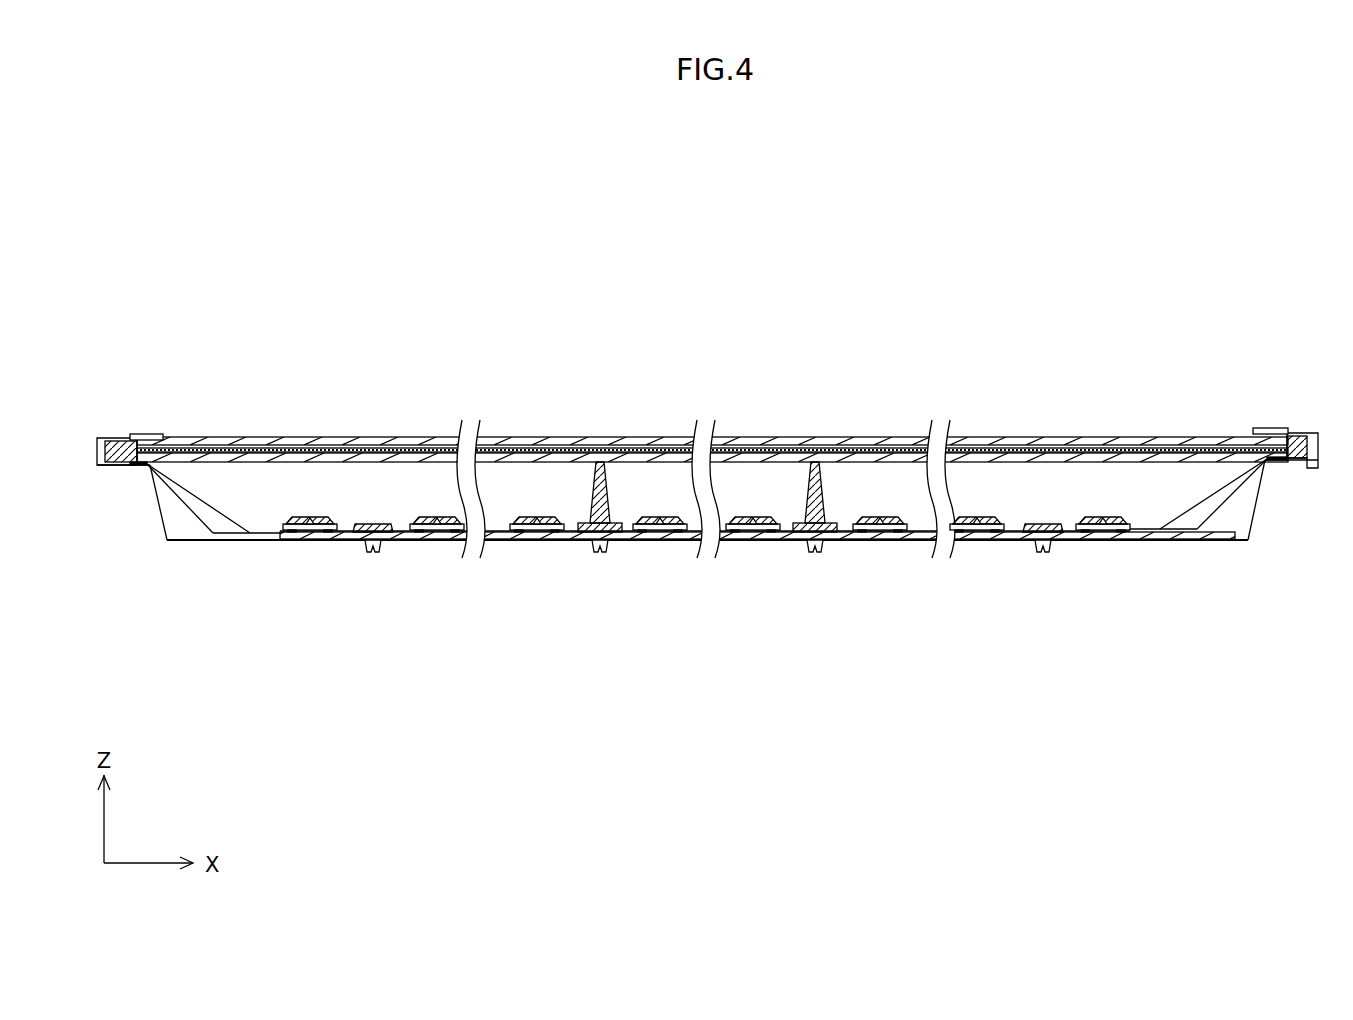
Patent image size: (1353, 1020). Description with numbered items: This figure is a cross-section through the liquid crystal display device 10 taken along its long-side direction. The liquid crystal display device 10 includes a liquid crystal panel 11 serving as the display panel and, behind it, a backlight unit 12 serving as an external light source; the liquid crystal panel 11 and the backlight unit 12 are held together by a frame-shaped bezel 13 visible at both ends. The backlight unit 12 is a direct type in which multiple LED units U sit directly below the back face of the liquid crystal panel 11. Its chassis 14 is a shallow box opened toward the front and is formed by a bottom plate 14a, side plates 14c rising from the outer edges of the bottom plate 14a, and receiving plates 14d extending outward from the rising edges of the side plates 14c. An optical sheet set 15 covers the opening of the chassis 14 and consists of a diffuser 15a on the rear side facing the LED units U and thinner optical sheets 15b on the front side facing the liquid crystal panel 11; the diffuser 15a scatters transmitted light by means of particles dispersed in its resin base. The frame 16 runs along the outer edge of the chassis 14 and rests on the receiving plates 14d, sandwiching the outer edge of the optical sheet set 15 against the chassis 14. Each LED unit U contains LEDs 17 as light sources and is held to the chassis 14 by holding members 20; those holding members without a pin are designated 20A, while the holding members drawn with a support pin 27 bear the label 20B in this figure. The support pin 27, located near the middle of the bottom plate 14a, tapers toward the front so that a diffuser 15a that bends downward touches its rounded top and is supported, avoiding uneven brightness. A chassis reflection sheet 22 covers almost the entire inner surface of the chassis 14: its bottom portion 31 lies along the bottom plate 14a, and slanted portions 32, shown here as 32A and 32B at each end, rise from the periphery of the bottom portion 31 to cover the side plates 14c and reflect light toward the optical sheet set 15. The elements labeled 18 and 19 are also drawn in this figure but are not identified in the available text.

The liquid crystal display device 10 is at (594, 318).
The liquid crystal panel 11 is at (546, 437).
The backlight unit 12 is at (578, 594).
The bezel 13 is at (152, 433).
The chassis 14 is at (412, 542).
The bottom plate 14a is at (240, 542).
The side plate 14c is at (152, 542).
The receiving plate 14d is at (106, 470).
The optical sheet set 15 is at (712, 392).
The diffuser 15a is at (690, 457).
The optical sheet 15b is at (662, 451).
The frame 16 is at (107, 433).
The LED 17 is at (328, 542).
The LED board 18 is at (525, 542).
The LED 19 is at (310, 516).
The holding member 20 is at (771, 500).
The holding member without support pin 20A is at (378, 520).
The attachment hole for support pin 20B is at (627, 542).
The chassis reflection sheet 22 is at (708, 472).
The support pin 27 is at (600, 462).
The bottom portion 31 is at (1010, 527).
The slanted portion 32 is at (707, 468).
The first rising portion 32A is at (200, 493).
The second rising portion 32B is at (1227, 575).
The LED unit U is at (413, 505).